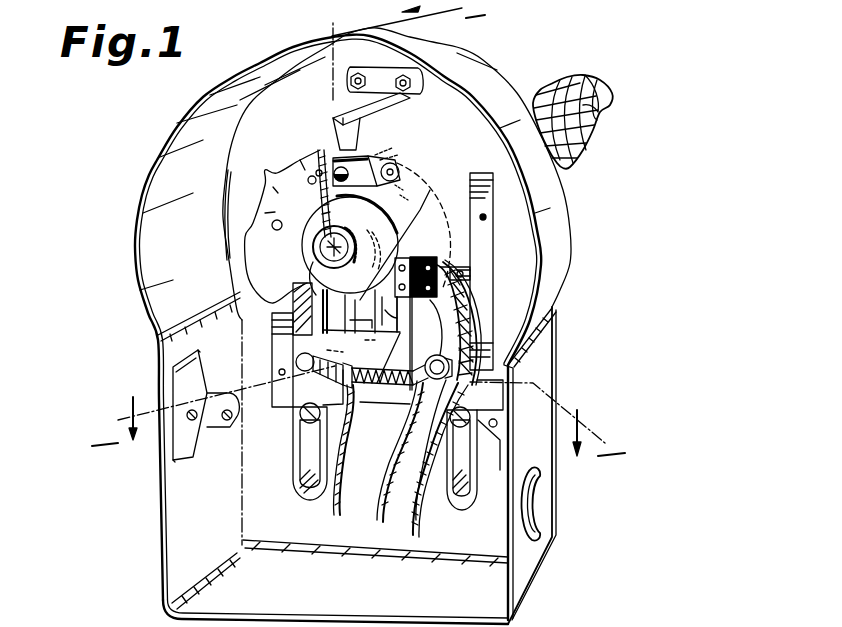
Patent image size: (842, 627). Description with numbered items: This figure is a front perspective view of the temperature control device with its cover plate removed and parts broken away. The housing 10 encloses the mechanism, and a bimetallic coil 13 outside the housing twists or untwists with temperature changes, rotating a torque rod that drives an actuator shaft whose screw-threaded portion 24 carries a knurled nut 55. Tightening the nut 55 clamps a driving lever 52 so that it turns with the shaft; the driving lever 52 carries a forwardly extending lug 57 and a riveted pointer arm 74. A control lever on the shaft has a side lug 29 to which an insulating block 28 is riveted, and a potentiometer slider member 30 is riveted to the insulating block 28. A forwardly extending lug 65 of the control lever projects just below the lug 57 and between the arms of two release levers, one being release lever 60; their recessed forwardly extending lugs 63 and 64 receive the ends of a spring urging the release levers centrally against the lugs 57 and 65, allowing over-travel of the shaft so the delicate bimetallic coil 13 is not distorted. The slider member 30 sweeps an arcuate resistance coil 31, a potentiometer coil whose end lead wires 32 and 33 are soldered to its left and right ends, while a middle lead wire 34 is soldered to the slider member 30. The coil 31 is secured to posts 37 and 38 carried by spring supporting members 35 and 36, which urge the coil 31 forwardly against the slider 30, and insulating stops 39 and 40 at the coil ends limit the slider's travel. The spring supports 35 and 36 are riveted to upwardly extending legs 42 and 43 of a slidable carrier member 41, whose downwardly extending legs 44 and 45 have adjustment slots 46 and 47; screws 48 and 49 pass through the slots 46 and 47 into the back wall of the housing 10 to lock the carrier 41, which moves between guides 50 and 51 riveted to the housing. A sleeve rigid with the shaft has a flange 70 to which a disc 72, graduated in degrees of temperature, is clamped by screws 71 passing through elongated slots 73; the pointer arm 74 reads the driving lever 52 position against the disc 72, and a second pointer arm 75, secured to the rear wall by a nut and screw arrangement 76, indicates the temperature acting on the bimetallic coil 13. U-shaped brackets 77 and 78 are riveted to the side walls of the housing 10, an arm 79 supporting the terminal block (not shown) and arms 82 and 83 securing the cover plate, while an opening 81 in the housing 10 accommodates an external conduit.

The housing 10 is at (543, 348).
The bimetallic coil 13 is at (600, 140).
The screw-threaded portion 24 is at (323, 260).
The insulating block 28 is at (424, 257).
The side lug 29 is at (407, 315).
The potentiometer slider member 30 is at (430, 327).
The resistance coil 31 is at (388, 387).
The end lead wire 32 is at (350, 428).
The end lead wire 33 is at (384, 463).
The middle lead wire 34 is at (420, 518).
The spring supporting member 35 is at (281, 360).
The spring supporting member 36 is at (476, 325).
The post 37 is at (280, 363).
The post 38 is at (457, 323).
The insulating stop 39 is at (336, 380).
The insulating stop 40 is at (432, 375).
The slidable carrier member 41 is at (405, 412).
The upwardly extending leg 42 is at (292, 310).
The upwardly extending leg 43 is at (468, 274).
The downwardly extending leg 44 is at (294, 448).
The downwardly extending leg 45 is at (470, 490).
The adjustment slot 46 is at (310, 470).
The adjustment slot 47 is at (465, 508).
The screw 48 is at (300, 425).
The screw 49 is at (467, 415).
The guide 50 is at (282, 165).
The guide 51 is at (487, 247).
The driving lever 52 is at (400, 205).
The knurled nut 55 is at (383, 220).
The forwardly extending lug 57 is at (366, 259).
The release lever 60 is at (383, 317).
The forwardly extending lug 63 is at (361, 321).
The forwardly extending lug 64 is at (387, 336).
The forwardly extending lug 65 is at (326, 278).
The flange 70 is at (397, 225).
The screw 71 is at (312, 247).
The disc 72 is at (268, 205).
The elongated slot 73 is at (330, 223).
The pointer arm 74 is at (385, 158).
The pointer arm 75 is at (340, 108).
The nut and screw arrangement 76 is at (422, 93).
The U-shaped bracket 77 is at (172, 362).
The U-shaped bracket 78 is at (488, 445).
The arm 79 is at (217, 430).
The opening 81 is at (545, 500).
The arm 82 is at (190, 462).
The arm 83 is at (497, 420).